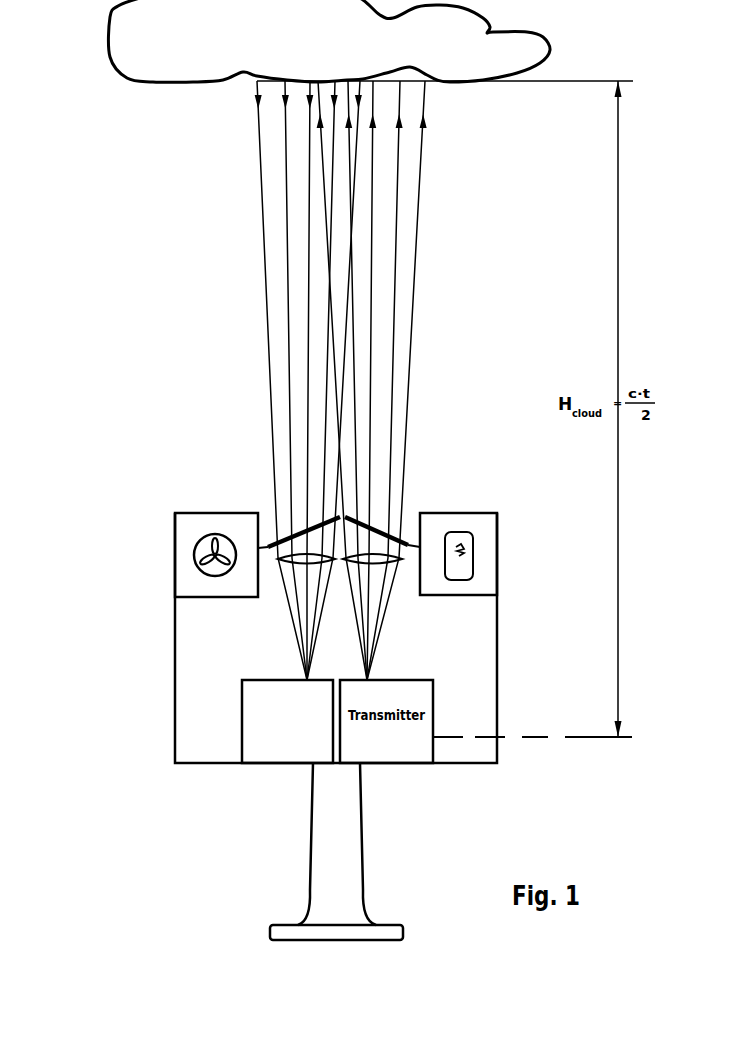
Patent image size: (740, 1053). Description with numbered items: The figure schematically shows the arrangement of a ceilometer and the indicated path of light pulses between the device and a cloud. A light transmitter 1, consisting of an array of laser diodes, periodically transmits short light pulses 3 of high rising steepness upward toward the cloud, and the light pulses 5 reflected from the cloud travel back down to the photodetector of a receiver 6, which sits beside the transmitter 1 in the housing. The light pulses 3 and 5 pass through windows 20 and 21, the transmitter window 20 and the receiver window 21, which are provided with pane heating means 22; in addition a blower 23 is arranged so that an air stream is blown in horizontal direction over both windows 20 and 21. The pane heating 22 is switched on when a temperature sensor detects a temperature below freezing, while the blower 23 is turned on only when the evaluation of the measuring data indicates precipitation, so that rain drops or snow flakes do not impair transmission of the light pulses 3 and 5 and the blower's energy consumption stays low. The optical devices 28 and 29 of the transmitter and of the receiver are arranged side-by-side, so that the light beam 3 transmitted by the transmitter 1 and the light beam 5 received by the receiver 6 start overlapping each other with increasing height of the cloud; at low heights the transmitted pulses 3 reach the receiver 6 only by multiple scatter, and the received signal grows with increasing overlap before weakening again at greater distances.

The light transmitter 1 is at (427, 725).
The light pulses 3 is at (415, 273).
The reflected light pulses 5 is at (266, 273).
The receiver 6 is at (255, 745).
The transmitter window 20 is at (385, 515).
The receiver window 21 is at (300, 515).
The pane heating means 22 is at (490, 535).
The blower 23 is at (197, 528).
The optical device of the transmitter 28 is at (380, 575).
The optical device of the receiver 29 is at (303, 573).